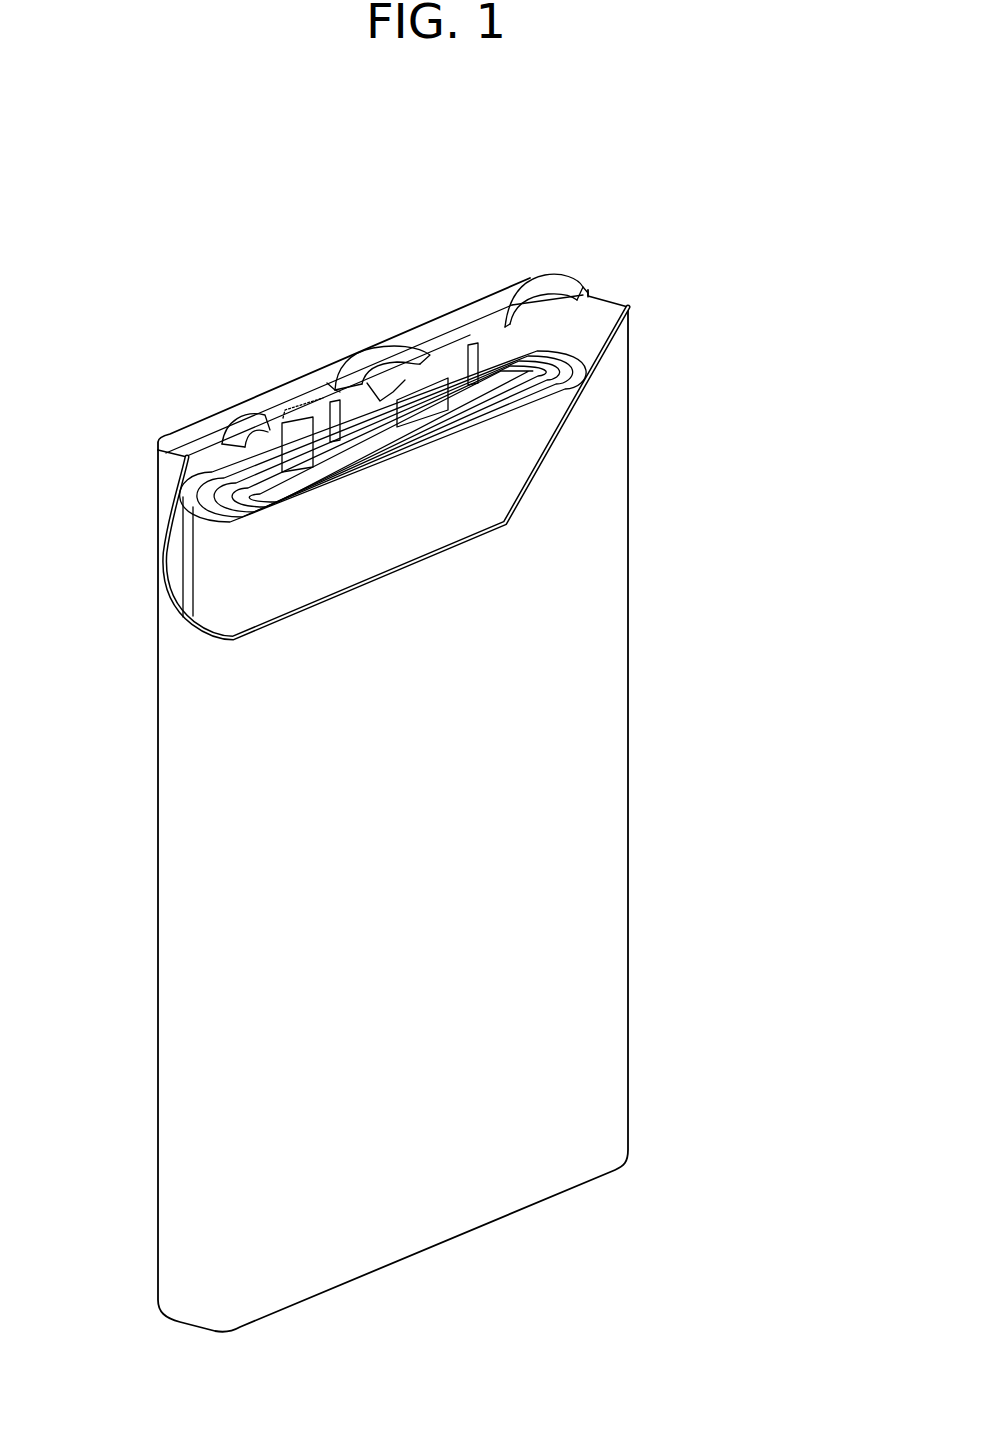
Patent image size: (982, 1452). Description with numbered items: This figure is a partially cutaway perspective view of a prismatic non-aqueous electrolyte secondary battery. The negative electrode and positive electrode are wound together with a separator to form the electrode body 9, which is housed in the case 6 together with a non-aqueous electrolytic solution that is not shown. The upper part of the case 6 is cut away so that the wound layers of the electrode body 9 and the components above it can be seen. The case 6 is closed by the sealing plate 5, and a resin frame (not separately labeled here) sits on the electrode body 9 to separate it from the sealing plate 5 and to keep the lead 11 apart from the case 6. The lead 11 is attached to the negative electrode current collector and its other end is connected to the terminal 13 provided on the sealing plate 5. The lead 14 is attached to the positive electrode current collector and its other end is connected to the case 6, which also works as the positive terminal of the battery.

The sealing plate 5 is at (492, 322).
The case 6 is at (610, 635).
The electrode body 9 is at (248, 555).
The lead 11 is at (297, 445).
The terminal 13 is at (373, 352).
The lead 14 is at (423, 402).